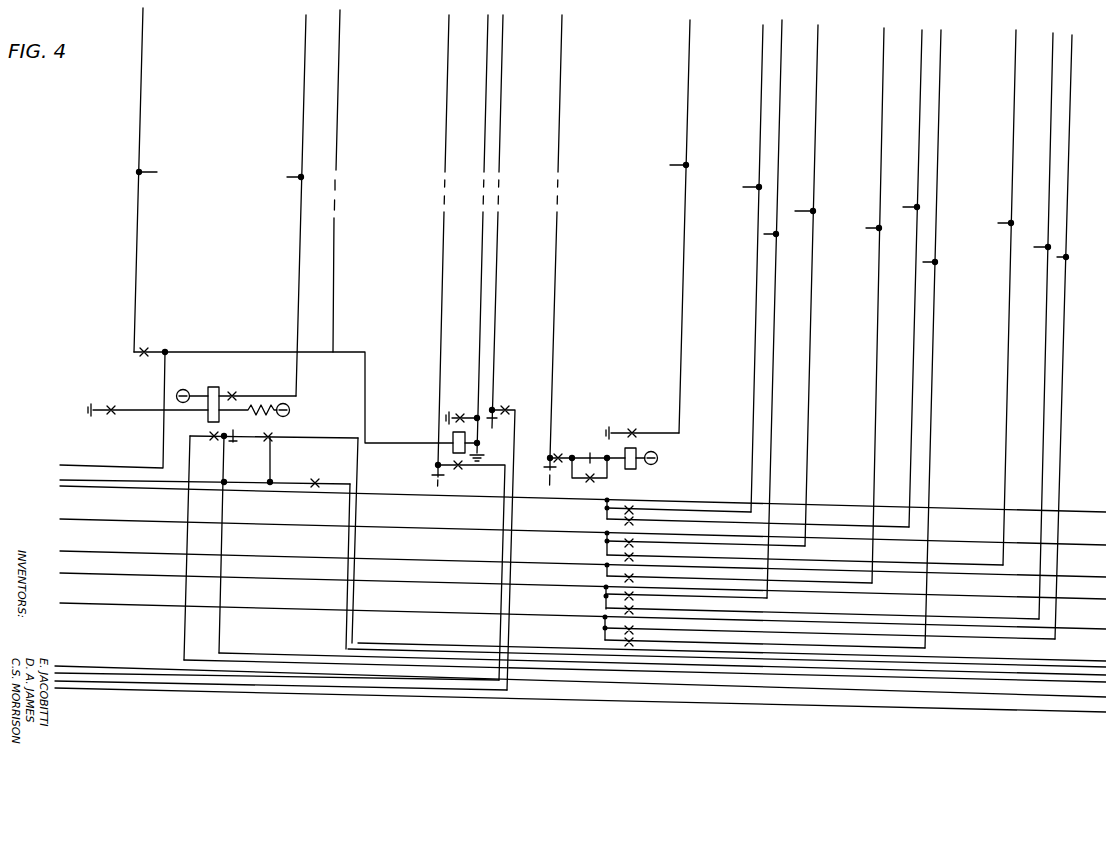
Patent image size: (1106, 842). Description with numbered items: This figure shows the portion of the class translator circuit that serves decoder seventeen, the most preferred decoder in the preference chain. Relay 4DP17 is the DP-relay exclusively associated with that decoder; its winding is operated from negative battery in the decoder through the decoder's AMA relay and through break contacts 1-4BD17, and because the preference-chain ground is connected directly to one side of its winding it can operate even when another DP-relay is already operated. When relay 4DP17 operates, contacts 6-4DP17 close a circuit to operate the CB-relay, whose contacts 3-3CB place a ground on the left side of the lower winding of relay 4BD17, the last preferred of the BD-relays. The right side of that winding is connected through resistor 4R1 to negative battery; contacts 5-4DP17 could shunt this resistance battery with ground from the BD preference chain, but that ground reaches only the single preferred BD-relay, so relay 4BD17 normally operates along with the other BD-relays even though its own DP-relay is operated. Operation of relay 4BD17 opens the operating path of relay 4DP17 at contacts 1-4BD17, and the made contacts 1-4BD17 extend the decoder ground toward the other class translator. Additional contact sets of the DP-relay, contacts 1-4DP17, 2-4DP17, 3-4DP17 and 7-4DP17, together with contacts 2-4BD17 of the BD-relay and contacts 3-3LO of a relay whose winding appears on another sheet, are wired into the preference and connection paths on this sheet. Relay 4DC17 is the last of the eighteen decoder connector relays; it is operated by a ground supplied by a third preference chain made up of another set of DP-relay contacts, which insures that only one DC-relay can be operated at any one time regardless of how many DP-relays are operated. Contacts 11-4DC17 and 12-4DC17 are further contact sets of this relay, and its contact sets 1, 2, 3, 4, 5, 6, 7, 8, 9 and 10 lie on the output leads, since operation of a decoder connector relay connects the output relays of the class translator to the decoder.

The contacts 1 of relay 4DC17 1 is at (642, 429).
The contacts 2 of relay 4DC17 2 is at (679, 507).
The contacts 3 of relay 4DC17 3 is at (758, 520).
The contacts 4 of relay 4DC17 4 is at (706, 540).
The contacts 5 of relay 4DC17 5 is at (805, 556).
The contacts 6 of relay 4DC17 6 is at (739, 575).
The contacts 7 of relay 4DC17 7 is at (686, 593).
The contacts 8 of relay 4DC17 8 is at (822, 609).
The contacts 9 of relay 4DC17 9 is at (830, 629).
The contacts 10 of relay 4DC17 10 is at (765, 640).
The BD-relay 4BD17 is at (206, 397).
The contacts 2 of relay 4BD17 2-4BD17 is at (257, 390).
The contacts 1 of relay 4BD17 1-4BD17 is at (214, 433).
The resistor 4R1 is at (254, 421).
The contacts 12 of relay 4DC17 12-4DC17 is at (268, 457).
The contacts 5 of relay 4DP17 5-4DP17 is at (306, 475).
The contacts 6 of relay 4DP17 6-4DP17 is at (293, 387).
The contacts 3 of relay 3CB 3-3CB is at (148, 403).
The contacts 1 of relay 4DP17 1-4DP17 is at (475, 412).
The DP-relay 4DP17 is at (452, 437).
The contacts 2 of relay 4DP17 2-4DP17 is at (468, 570).
The contacts 3 of relay 4DP17 3-4DP17 is at (514, 542).
The contacts 7 of relay 4DP17 7-4DP17 is at (553, 455).
The contacts 3 of relay 3LO 3-3LO is at (590, 453).
The contacts 11 of relay 4DC17 11-4DC17 is at (593, 477).
The decoder connector relay 4DC17 is at (643, 453).